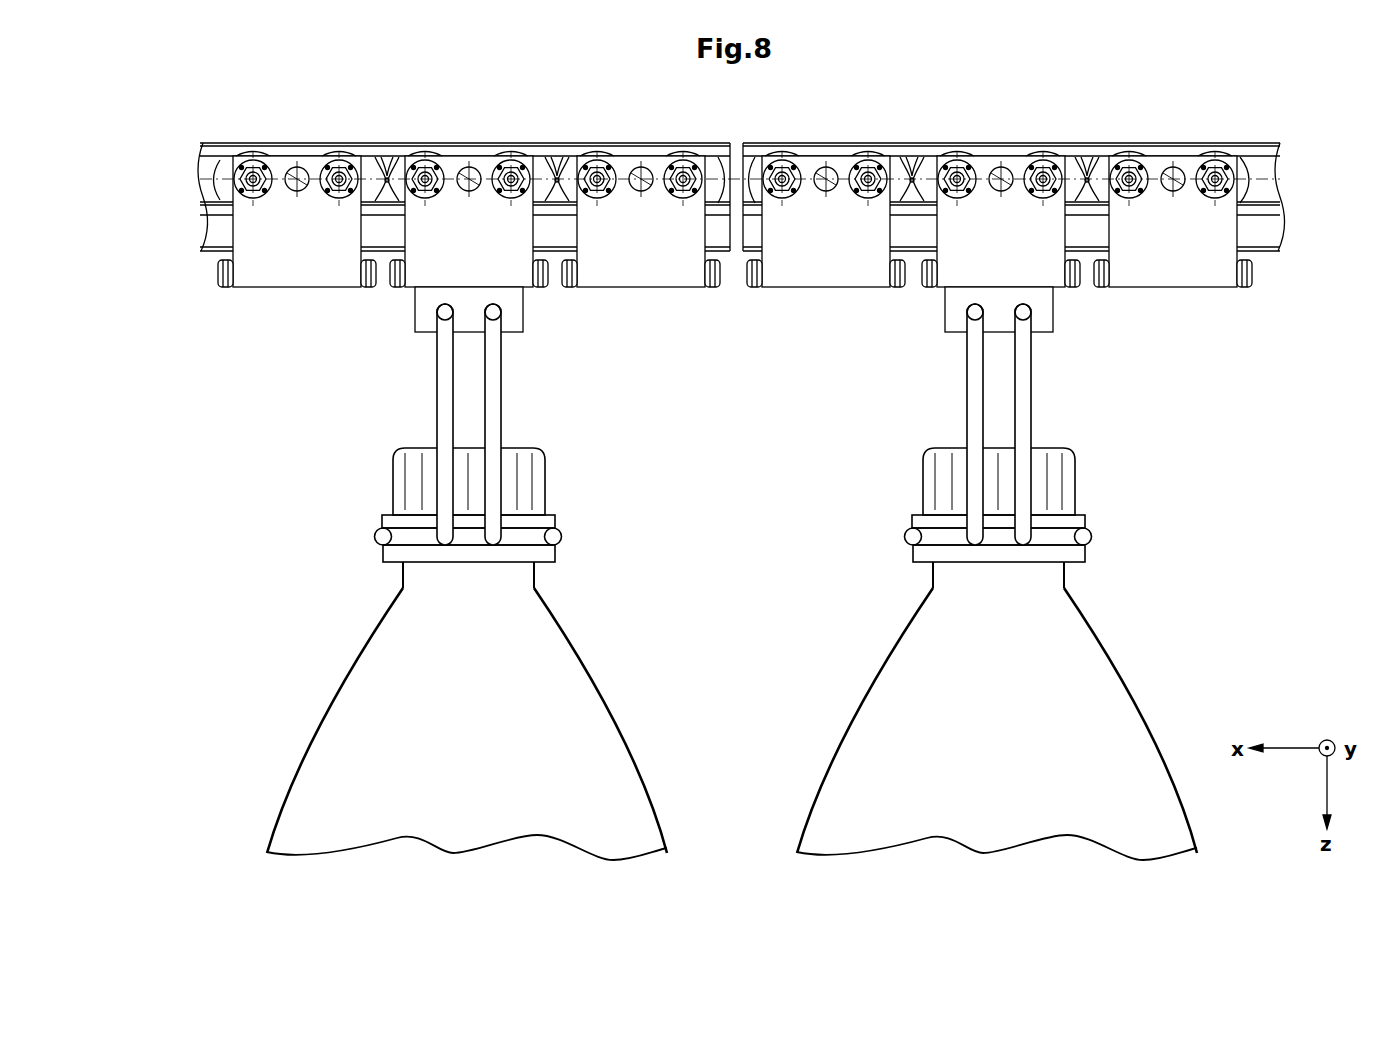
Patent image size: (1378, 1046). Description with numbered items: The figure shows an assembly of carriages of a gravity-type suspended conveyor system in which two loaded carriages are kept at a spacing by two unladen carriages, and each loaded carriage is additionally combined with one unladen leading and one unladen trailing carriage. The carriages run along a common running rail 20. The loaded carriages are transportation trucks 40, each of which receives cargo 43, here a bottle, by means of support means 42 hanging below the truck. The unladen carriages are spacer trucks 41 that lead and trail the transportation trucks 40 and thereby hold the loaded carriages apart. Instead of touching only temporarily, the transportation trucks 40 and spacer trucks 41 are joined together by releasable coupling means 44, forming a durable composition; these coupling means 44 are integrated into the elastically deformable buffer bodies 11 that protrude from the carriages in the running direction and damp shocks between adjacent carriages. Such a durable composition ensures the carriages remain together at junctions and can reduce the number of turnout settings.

The running rail 20 is at (727, 168).
The buffer bodies 11 is at (218, 170).
The transportation truck 40 is at (494, 198).
The spacer truck 41 is at (318, 205).
The support means 42 is at (427, 388).
The cargo 43 is at (336, 742).
The releasable coupling means 44 is at (387, 170).